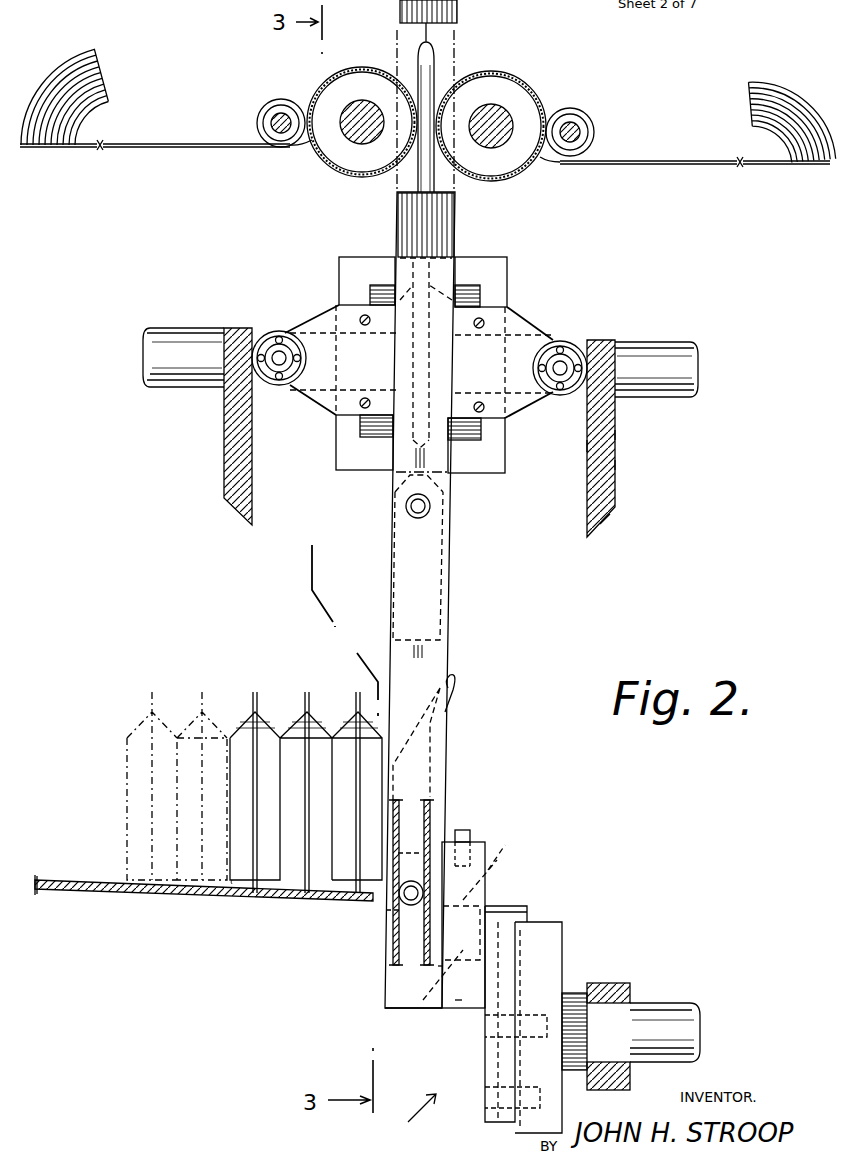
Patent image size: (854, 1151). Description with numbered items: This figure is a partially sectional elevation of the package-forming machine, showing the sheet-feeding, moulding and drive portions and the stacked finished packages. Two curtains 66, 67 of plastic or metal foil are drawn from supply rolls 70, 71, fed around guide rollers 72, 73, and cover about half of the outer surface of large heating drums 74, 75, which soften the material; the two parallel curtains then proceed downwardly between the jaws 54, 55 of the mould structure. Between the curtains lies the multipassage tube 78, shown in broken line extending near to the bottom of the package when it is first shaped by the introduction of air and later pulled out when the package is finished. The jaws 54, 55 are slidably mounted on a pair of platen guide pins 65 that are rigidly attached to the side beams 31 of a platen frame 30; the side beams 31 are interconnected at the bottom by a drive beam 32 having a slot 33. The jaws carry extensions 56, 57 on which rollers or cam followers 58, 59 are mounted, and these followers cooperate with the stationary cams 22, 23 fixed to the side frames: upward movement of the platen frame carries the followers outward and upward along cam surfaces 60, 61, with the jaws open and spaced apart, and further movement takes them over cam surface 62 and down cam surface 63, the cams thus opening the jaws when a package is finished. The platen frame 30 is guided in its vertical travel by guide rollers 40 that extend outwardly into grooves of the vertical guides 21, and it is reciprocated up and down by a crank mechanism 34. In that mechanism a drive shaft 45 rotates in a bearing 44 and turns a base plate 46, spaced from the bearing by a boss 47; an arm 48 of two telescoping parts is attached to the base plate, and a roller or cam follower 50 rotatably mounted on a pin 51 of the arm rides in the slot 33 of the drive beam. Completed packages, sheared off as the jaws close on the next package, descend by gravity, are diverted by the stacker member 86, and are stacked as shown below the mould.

The supply roll 70 is at (773, 106).
The supply roll 71 is at (70, 88).
The curtain 66 is at (678, 160).
The curtain 67 is at (175, 115).
The guide roller 72 is at (594, 124).
The guide roller 73 is at (263, 110).
The heating drum 74 is at (520, 175).
The heating drum 75 is at (325, 170).
The multipassage tube 78 is at (436, 48).
The jaw 54 is at (500, 273).
The jaw 55 is at (340, 270).
The extension 56 is at (535, 335).
The extension 57 is at (320, 328).
The cam follower 58 is at (572, 343).
The cam follower 59 is at (274, 330).
The cam surface 62 is at (607, 342).
The platen guide pin 65 is at (690, 362).
The cam 23 is at (224, 450).
The cam 22 is at (614, 462).
The cam surface 61 is at (616, 435).
The cam surface 63 is at (587, 446).
The cam surface 60 is at (606, 527).
The guide roller 40 is at (431, 507).
The platen frame 30 is at (446, 600).
The stacker member 86 is at (455, 678).
The vertical guide 21 is at (430, 830).
The cam follower 50 is at (490, 872).
The pin 51 is at (492, 902).
The arm 48 is at (505, 920).
The base plate 46 is at (552, 930).
The boss 47 is at (574, 985).
The bearing 44 is at (614, 985).
The drive shaft 45 is at (678, 1008).
The side beam 31 is at (388, 1002).
The drive beam 32 is at (458, 1003).
The slot 33 is at (438, 968).
The crank mechanism 34 is at (407, 1122).